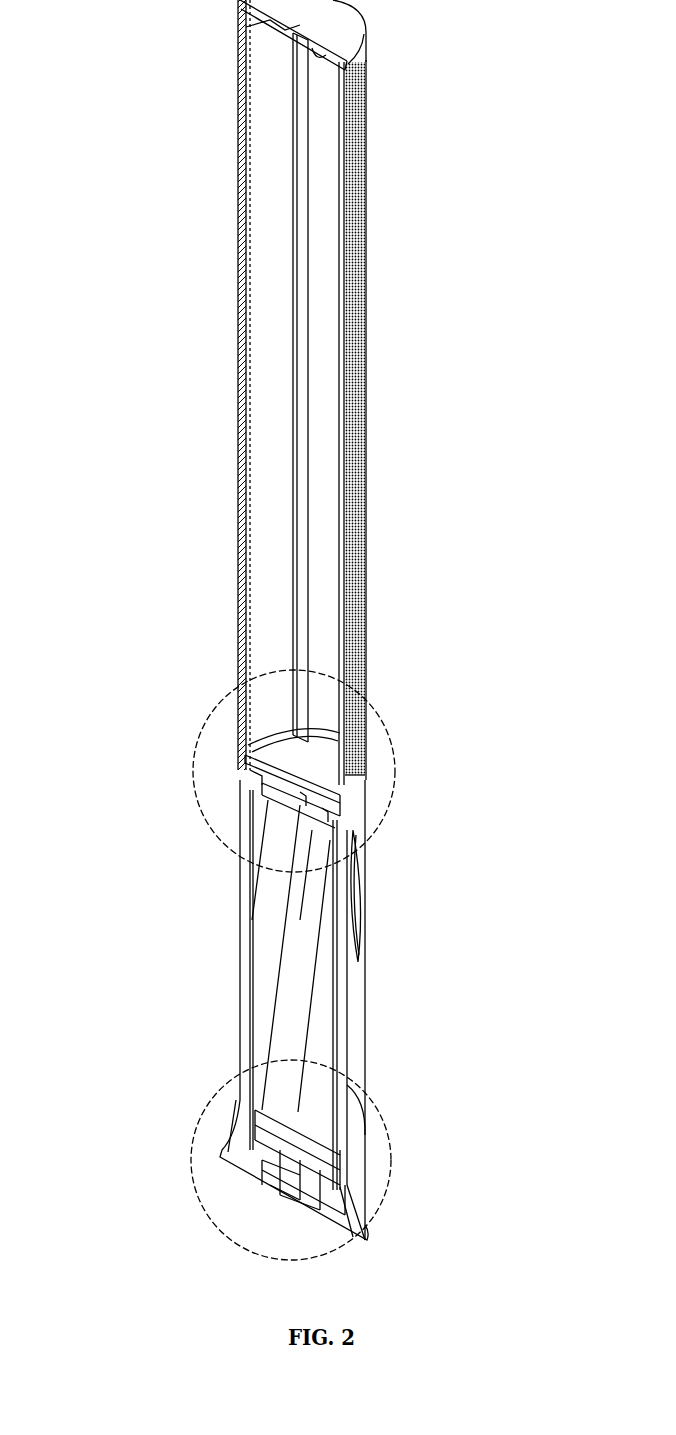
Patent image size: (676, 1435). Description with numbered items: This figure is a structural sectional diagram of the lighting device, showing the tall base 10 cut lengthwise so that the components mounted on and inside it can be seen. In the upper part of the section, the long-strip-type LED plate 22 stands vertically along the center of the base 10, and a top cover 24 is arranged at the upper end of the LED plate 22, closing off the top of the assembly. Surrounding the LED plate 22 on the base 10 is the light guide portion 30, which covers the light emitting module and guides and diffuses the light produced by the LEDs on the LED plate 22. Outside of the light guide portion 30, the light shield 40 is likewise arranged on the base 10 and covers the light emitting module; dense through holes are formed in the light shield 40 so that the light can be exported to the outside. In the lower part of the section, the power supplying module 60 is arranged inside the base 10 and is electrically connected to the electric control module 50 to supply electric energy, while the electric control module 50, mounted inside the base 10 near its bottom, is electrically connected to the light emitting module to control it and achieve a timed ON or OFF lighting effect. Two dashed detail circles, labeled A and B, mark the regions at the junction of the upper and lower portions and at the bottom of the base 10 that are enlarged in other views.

The base 10 is at (356, 944).
The LED plate 22 is at (301, 500).
The top cover 24 is at (328, 31).
The light guide portion 30 is at (330, 588).
The light shield 40 is at (357, 388).
The electric control module 50 is at (295, 1160).
The power supplying module 60 is at (294, 1020).
The detail region A is at (397, 771).
The detail region B is at (195, 1133).